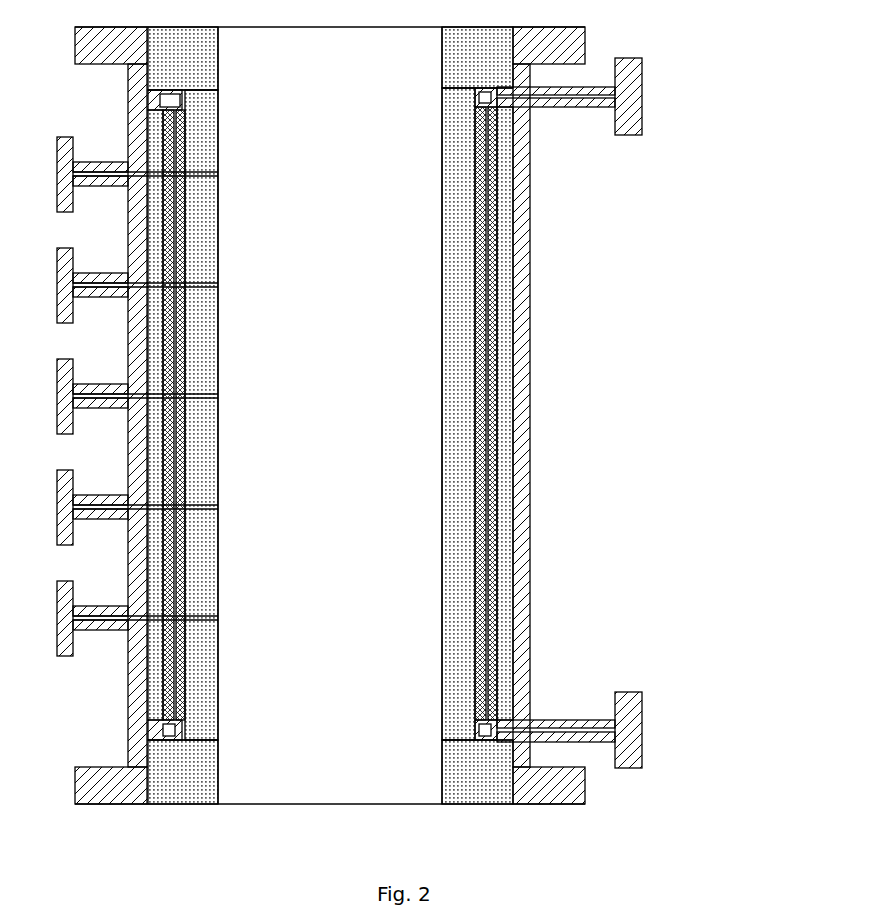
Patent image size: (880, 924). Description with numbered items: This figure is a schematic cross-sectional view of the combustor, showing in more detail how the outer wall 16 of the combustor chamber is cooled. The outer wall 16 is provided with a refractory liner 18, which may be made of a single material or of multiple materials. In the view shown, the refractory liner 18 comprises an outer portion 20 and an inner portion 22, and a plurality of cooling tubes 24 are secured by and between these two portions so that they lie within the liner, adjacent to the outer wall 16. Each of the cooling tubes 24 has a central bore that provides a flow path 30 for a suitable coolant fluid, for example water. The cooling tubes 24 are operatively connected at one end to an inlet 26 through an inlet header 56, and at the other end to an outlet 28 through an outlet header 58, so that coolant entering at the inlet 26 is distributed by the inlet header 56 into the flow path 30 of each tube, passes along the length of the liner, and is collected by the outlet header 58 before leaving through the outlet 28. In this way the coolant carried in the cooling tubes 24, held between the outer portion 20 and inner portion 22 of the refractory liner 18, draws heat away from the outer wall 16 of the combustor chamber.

The outer wall 16 is at (530, 243).
The refractory liner 18 is at (200, 137).
The outer portion 20 is at (505, 342).
The inner portion 22 is at (462, 630).
The cooling tubes 24 is at (493, 437).
The inlet 26 is at (645, 728).
The outlet 28 is at (645, 93).
The flow path 30 is at (490, 528).
The inlet header 56 is at (492, 722).
The outlet header 58 is at (505, 103).